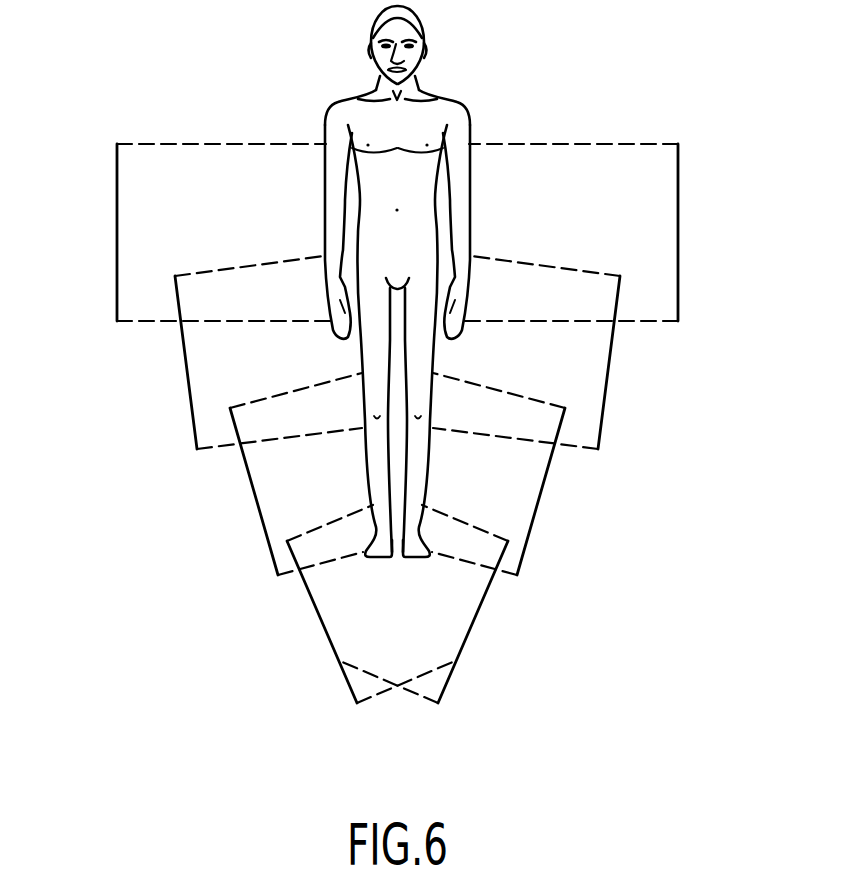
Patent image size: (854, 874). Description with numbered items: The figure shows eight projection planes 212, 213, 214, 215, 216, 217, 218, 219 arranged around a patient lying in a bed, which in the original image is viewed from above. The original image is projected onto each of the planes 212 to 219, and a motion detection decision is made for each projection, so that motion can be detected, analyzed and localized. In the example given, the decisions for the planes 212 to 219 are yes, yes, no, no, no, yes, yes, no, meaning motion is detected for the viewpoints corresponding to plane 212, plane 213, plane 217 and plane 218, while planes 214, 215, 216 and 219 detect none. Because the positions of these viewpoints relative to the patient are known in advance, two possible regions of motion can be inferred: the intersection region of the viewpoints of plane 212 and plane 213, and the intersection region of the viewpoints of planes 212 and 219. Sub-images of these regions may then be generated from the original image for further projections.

The projection plane 212 is at (117, 281).
The projection plane 213 is at (187, 371).
The projection plane 214 is at (259, 511).
The projection plane 215 is at (340, 663).
The projection plane 216 is at (455, 662).
The projection plane 217 is at (536, 510).
The projection plane 218 is at (608, 371).
The projection plane 219 is at (678, 278).